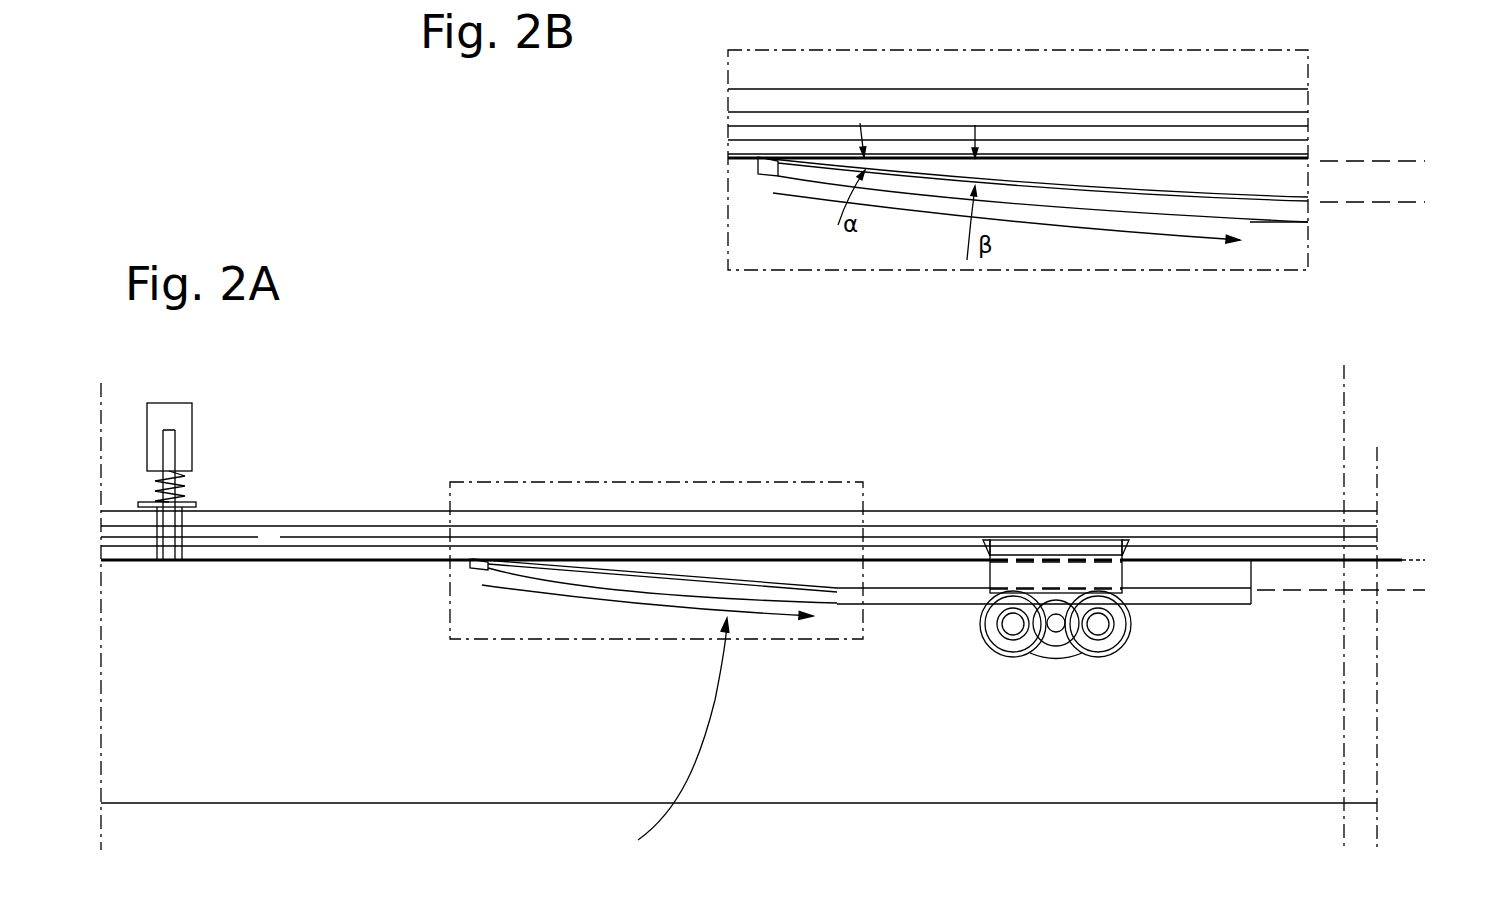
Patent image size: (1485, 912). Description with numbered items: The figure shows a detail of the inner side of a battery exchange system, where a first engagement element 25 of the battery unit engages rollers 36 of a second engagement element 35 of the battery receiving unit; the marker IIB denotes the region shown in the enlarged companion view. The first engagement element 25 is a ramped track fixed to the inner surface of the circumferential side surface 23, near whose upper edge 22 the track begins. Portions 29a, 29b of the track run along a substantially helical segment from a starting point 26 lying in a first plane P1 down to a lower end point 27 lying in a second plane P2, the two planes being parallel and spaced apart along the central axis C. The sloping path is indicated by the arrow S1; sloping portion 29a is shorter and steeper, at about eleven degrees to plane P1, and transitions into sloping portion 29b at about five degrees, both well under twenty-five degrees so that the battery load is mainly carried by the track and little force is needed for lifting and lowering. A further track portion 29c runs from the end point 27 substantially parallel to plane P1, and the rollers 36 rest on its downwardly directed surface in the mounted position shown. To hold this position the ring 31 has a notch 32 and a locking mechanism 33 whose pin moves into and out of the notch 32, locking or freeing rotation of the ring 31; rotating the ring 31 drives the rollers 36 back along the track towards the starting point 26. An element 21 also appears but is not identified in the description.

In FIG. 2A, the base 21 is at (858, 806).
In FIG. 2B, the upper edge 22 is at (1018, 142).
In FIG. 2A, the upper edge 22 is at (437, 555).
In FIG. 2A, the circumferential side surface 23 is at (1312, 588).
In FIG. 2A, the first engagement element 25 is at (670, 741).
In FIG. 2B, the starting point 26 is at (776, 176).
In FIG. 2A, the starting point 26 is at (488, 563).
In FIG. 2B, the end point 27 is at (1267, 203).
In FIG. 2A, the end point 27 is at (837, 593).
In FIG. 2B, the sloping portion 29a is at (828, 162).
In FIG. 2A, the sloping portion 29a is at (568, 572).
In FIG. 2B, the sloping portion 29b is at (1008, 182).
In FIG. 2A, the sloping portion 29b is at (765, 586).
In FIG. 2B, the track portion 29c is at (1285, 202).
In FIG. 2A, the track portion 29c is at (904, 590).
In FIG. 2B, the ring 31 is at (1018, 100).
In FIG. 2A, the ring 31 is at (925, 523).
In FIG. 2A, the notch 32 is at (185, 520).
In FIG. 2A, the locking mechanism 33 is at (150, 456).
In FIG. 2A, the second engagement element 35 is at (1068, 542).
In FIG. 2A, the rollers 36 is at (985, 645).
In FIG. 2B, the arrow S1 is at (1130, 233).
In FIG. 2A, the arrow S1 is at (592, 601).
In FIG. 2B, the first plane P1 is at (1392, 159).
In FIG. 2A, the first plane P1 is at (1437, 549).
In FIG. 2B, the second plane P2 is at (1392, 199).
In FIG. 2A, the second plane P2 is at (1364, 595).
In FIG. 2A, the central axis C is at (1345, 386).
In FIG. 2A, the section IIB is at (818, 483).